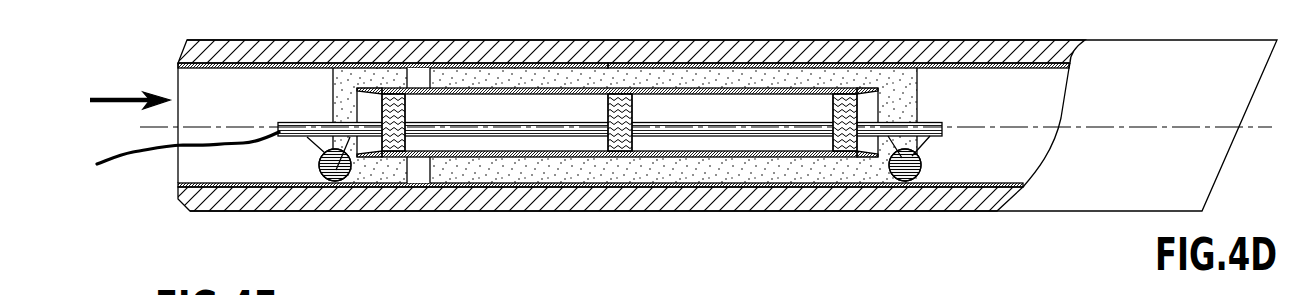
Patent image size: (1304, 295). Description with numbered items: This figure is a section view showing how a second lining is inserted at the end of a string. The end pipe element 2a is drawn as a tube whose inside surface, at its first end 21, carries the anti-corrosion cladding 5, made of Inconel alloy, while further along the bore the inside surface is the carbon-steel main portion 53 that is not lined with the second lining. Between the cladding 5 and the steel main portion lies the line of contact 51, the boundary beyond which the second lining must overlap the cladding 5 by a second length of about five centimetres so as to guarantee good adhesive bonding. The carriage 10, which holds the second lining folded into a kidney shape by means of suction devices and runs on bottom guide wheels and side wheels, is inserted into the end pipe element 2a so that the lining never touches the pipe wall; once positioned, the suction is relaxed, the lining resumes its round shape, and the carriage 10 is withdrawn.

The end pipe element 2a is at (680, 54).
The anti-corrosion cladding 5 is at (284, 64).
The line of contact 51 is at (436, 84).
The carbon-steel main portion 53 is at (970, 70).
The carriage 10 is at (336, 170).
The first end 21 is at (130, 80).